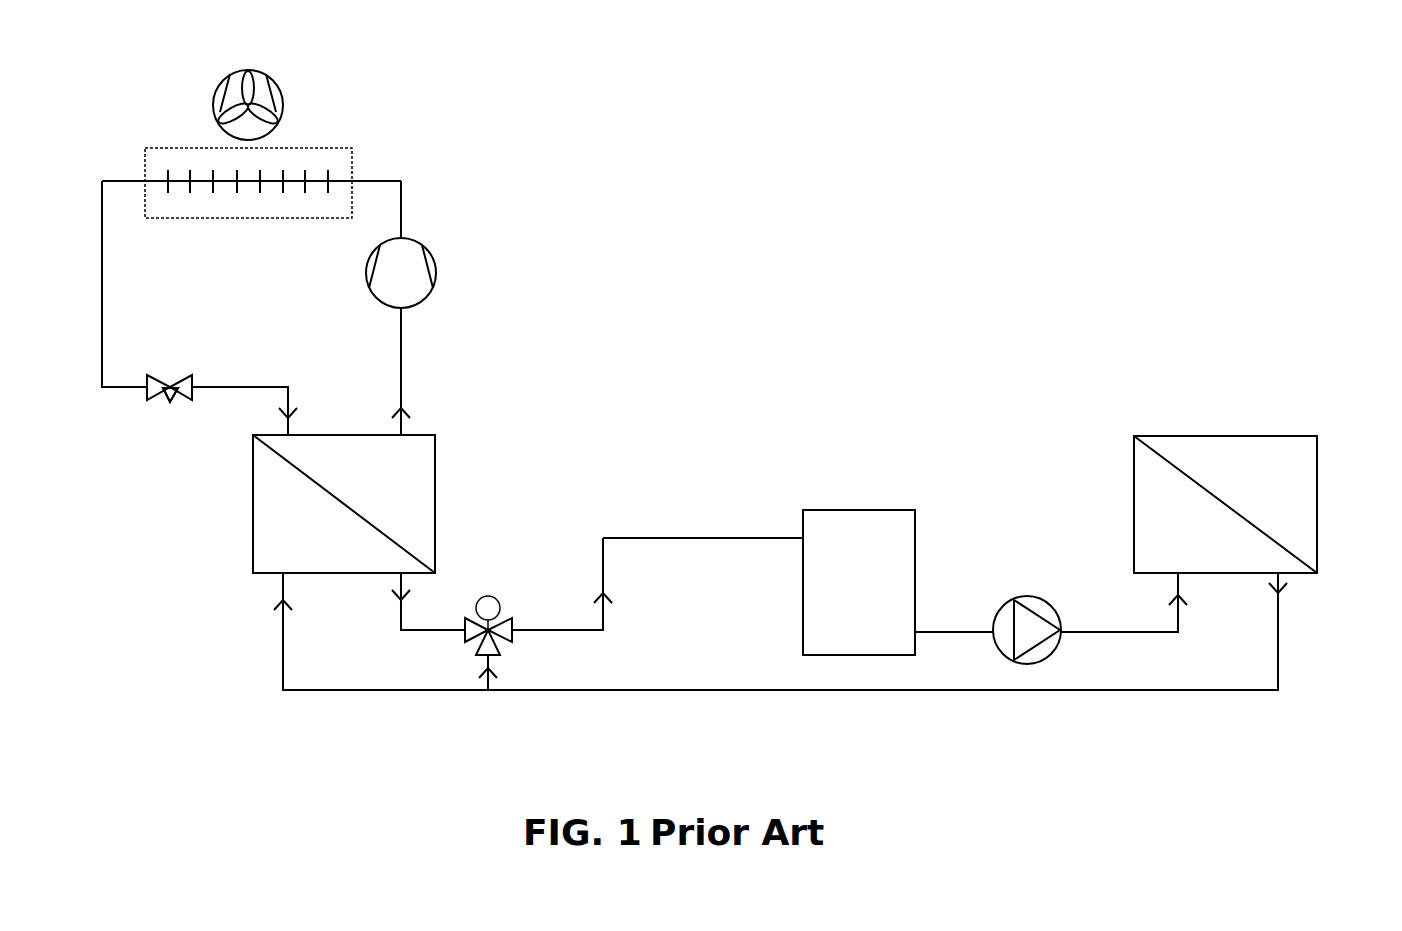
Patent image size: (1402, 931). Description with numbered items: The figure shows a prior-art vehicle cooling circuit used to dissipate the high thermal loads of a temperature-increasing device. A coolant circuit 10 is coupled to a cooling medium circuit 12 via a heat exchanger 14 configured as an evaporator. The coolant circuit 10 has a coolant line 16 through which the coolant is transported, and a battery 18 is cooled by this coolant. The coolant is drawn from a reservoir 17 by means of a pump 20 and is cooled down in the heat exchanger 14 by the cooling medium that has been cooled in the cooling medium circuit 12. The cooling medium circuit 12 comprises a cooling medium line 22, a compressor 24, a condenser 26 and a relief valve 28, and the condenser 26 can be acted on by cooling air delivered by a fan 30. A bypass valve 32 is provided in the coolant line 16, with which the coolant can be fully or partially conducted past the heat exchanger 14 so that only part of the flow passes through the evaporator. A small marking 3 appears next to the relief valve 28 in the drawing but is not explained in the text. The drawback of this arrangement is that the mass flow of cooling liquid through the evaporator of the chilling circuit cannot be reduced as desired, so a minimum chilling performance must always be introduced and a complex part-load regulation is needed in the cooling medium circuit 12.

The coolant circuit 10 is at (833, 490).
The cooling medium circuit 12 is at (472, 271).
The heat exchanger 14 is at (421, 483).
The coolant line 16 is at (1000, 690).
The reservoir 17 is at (897, 570).
The battery 18 is at (1297, 502).
The pump 20 is at (1040, 604).
The cooling medium line 22 is at (402, 370).
The compressor 24 is at (422, 305).
The condenser 26 is at (305, 172).
The relief valve 28 is at (157, 393).
The fan 30 is at (253, 72).
The bypass valve 32 is at (497, 646).
The valve marking 3 is at (170, 412).